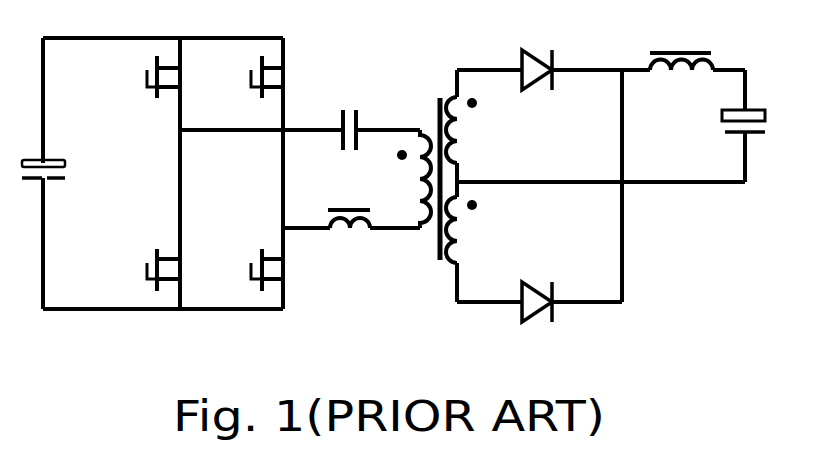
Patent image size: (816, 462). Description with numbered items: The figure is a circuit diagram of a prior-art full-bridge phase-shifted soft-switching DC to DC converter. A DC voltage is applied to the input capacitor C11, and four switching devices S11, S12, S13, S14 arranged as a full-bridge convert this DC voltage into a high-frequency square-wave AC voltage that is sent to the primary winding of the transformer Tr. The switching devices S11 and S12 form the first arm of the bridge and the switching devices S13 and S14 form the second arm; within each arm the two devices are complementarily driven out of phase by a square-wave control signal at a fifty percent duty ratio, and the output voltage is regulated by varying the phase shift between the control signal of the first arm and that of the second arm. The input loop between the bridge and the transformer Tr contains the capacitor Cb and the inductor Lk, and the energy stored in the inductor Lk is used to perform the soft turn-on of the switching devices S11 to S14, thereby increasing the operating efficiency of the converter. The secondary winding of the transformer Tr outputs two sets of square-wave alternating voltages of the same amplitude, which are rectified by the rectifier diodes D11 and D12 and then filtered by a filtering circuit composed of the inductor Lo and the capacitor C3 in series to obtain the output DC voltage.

The switching device S11 is at (136, 77).
The switching device S12 is at (136, 270).
The switching device S13 is at (241, 77).
The switching device S14 is at (241, 270).
The input capacitor C11 is at (72, 169).
The capacitor Cb is at (354, 112).
The inductor Lk is at (349, 237).
The transformer Tr is at (437, 169).
The rectifier diode D11 is at (545, 86).
The rectifier diode D12 is at (547, 286).
The inductor Lo is at (681, 78).
The capacitor C3 is at (725, 136).